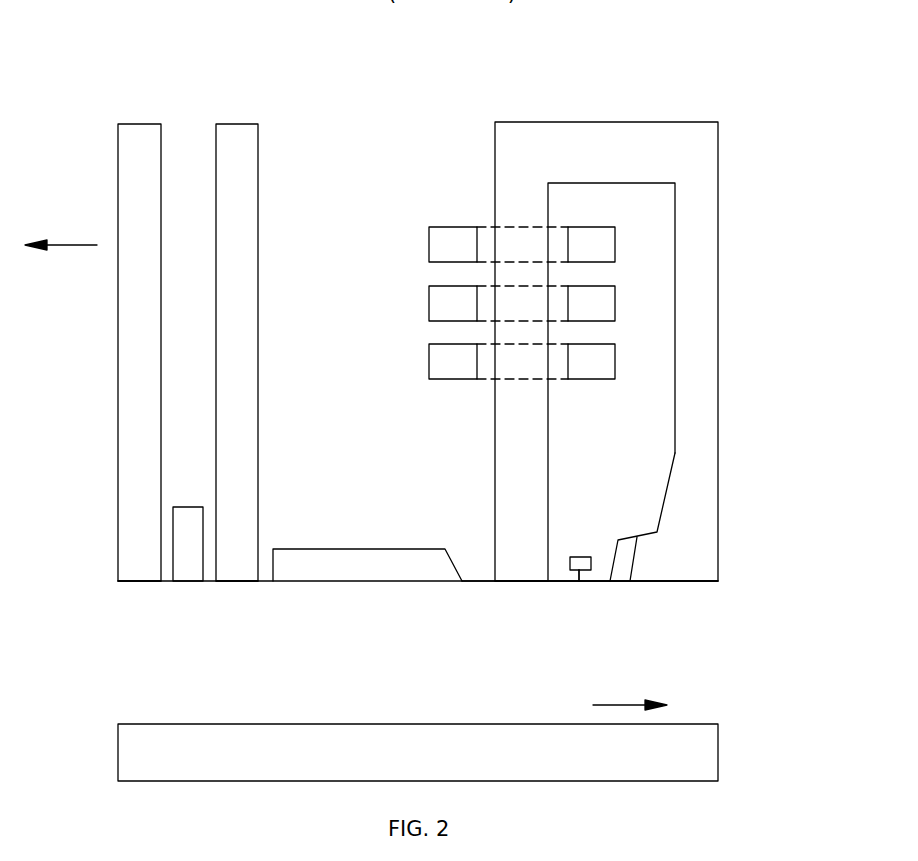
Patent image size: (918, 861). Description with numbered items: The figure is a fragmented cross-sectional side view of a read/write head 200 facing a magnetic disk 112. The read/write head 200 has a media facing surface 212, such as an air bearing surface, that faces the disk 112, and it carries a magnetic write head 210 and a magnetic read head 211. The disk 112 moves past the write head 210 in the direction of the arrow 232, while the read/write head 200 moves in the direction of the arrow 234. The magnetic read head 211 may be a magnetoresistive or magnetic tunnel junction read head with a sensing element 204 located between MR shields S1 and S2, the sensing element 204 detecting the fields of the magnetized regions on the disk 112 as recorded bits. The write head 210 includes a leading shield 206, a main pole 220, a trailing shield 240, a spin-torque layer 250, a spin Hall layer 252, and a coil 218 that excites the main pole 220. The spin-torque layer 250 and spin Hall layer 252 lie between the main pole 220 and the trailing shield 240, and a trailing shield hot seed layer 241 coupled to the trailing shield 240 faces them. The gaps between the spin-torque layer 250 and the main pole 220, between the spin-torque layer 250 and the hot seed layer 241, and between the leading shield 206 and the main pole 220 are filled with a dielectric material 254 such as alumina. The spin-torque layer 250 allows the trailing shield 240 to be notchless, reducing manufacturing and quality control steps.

The read/write head 200 is at (289, 51).
The magnetic read head 211 is at (265, 106).
The magnetic write head 210 is at (730, 108).
The coil 218 is at (455, 380).
The arrow 234 is at (80, 245).
The arrow 232 is at (613, 705).
The MR shield S1 is at (137, 582).
The MR shield S2 is at (237, 583).
The MR sensing element 204 is at (187, 582).
The leading shield 206 is at (328, 583).
The dielectric material 254 is at (474, 568).
The main pole 220 is at (520, 568).
The spin-torque layer 250 is at (579, 583).
The spin Hall layer 252 is at (583, 557).
The trailing shield 240 is at (695, 540).
The trailing shield hot seed layer 241 is at (622, 567).
The media facing surface 212 is at (708, 582).
The magnetic disk 112 is at (700, 756).